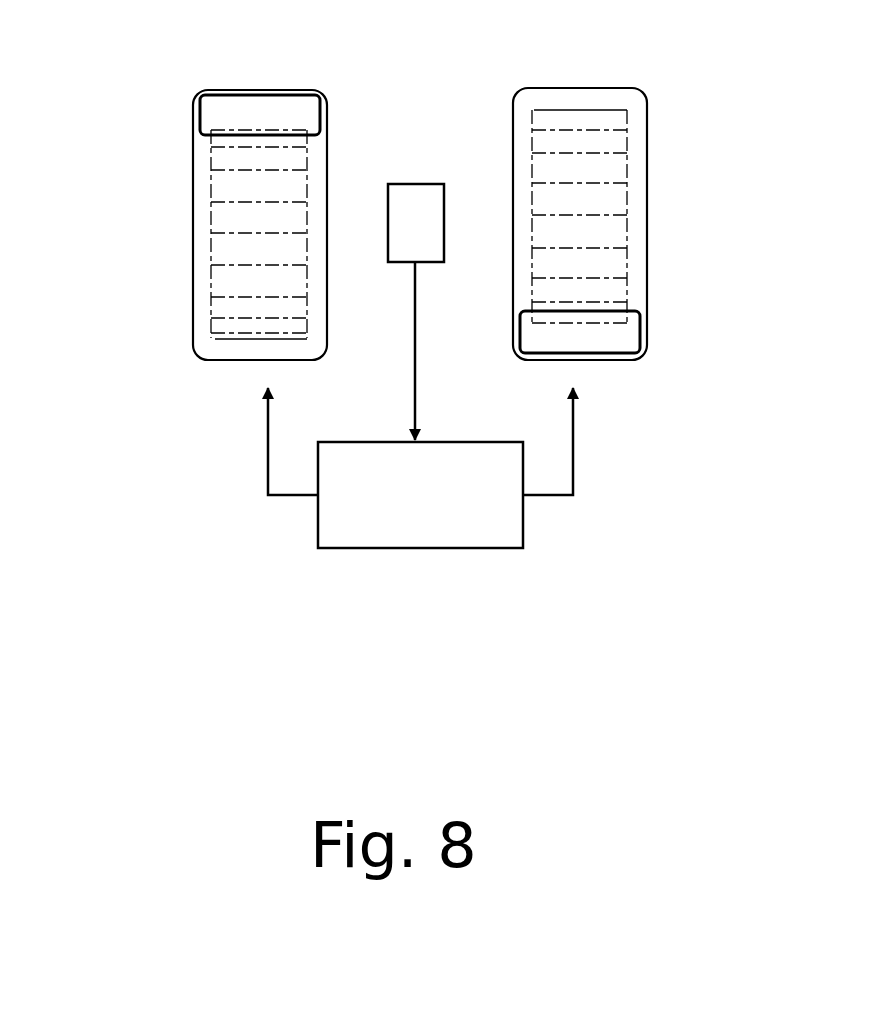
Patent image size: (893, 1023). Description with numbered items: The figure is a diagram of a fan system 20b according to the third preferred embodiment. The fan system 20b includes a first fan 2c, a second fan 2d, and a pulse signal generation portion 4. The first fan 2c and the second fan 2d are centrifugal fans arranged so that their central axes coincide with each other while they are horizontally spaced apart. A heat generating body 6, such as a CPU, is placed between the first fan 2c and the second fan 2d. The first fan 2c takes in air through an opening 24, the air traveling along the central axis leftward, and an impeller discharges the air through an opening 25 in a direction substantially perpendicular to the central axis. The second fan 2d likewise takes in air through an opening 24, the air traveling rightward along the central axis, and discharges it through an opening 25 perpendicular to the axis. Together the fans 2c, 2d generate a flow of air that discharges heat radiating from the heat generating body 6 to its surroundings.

The fan system 20b is at (142, 92).
The first fan 2c is at (163, 200).
The second fan 2d is at (674, 233).
The opening 25 is at (260, 112).
The opening 24 is at (328, 207).
The heat generating body 6 is at (425, 183).
The pulse signal generation portion 4 is at (401, 549).